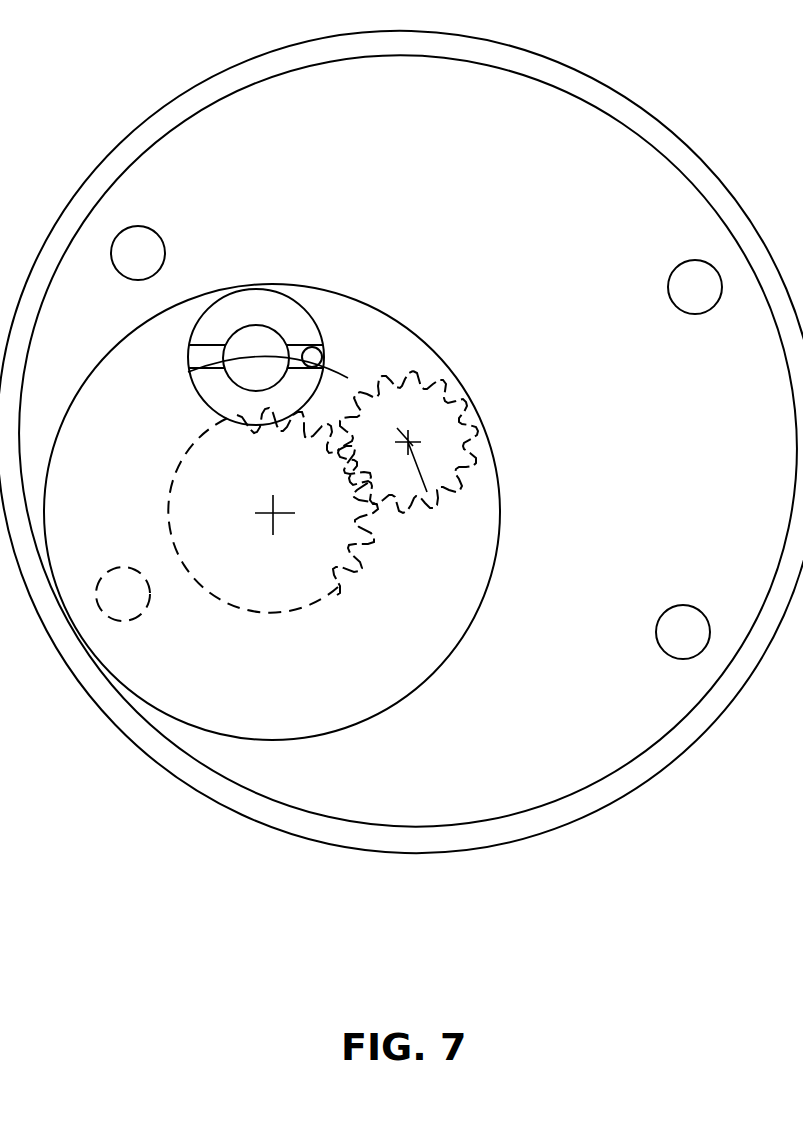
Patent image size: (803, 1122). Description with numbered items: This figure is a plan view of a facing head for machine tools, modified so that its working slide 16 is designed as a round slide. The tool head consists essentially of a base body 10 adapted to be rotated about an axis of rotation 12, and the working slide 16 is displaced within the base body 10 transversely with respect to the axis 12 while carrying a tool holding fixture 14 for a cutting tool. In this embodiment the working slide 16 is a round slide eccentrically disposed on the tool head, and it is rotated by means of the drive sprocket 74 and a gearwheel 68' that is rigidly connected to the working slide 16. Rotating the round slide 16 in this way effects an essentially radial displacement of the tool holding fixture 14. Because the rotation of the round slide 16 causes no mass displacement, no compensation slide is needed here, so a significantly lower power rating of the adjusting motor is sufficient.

The base body 10 is at (570, 132).
The axis of rotation 12 is at (408, 442).
The tool holding fixture 14 is at (295, 328).
The working slide 16 is at (350, 660).
The drive sprocket 74 is at (445, 432).
The gearwheel 68' is at (382, 510).